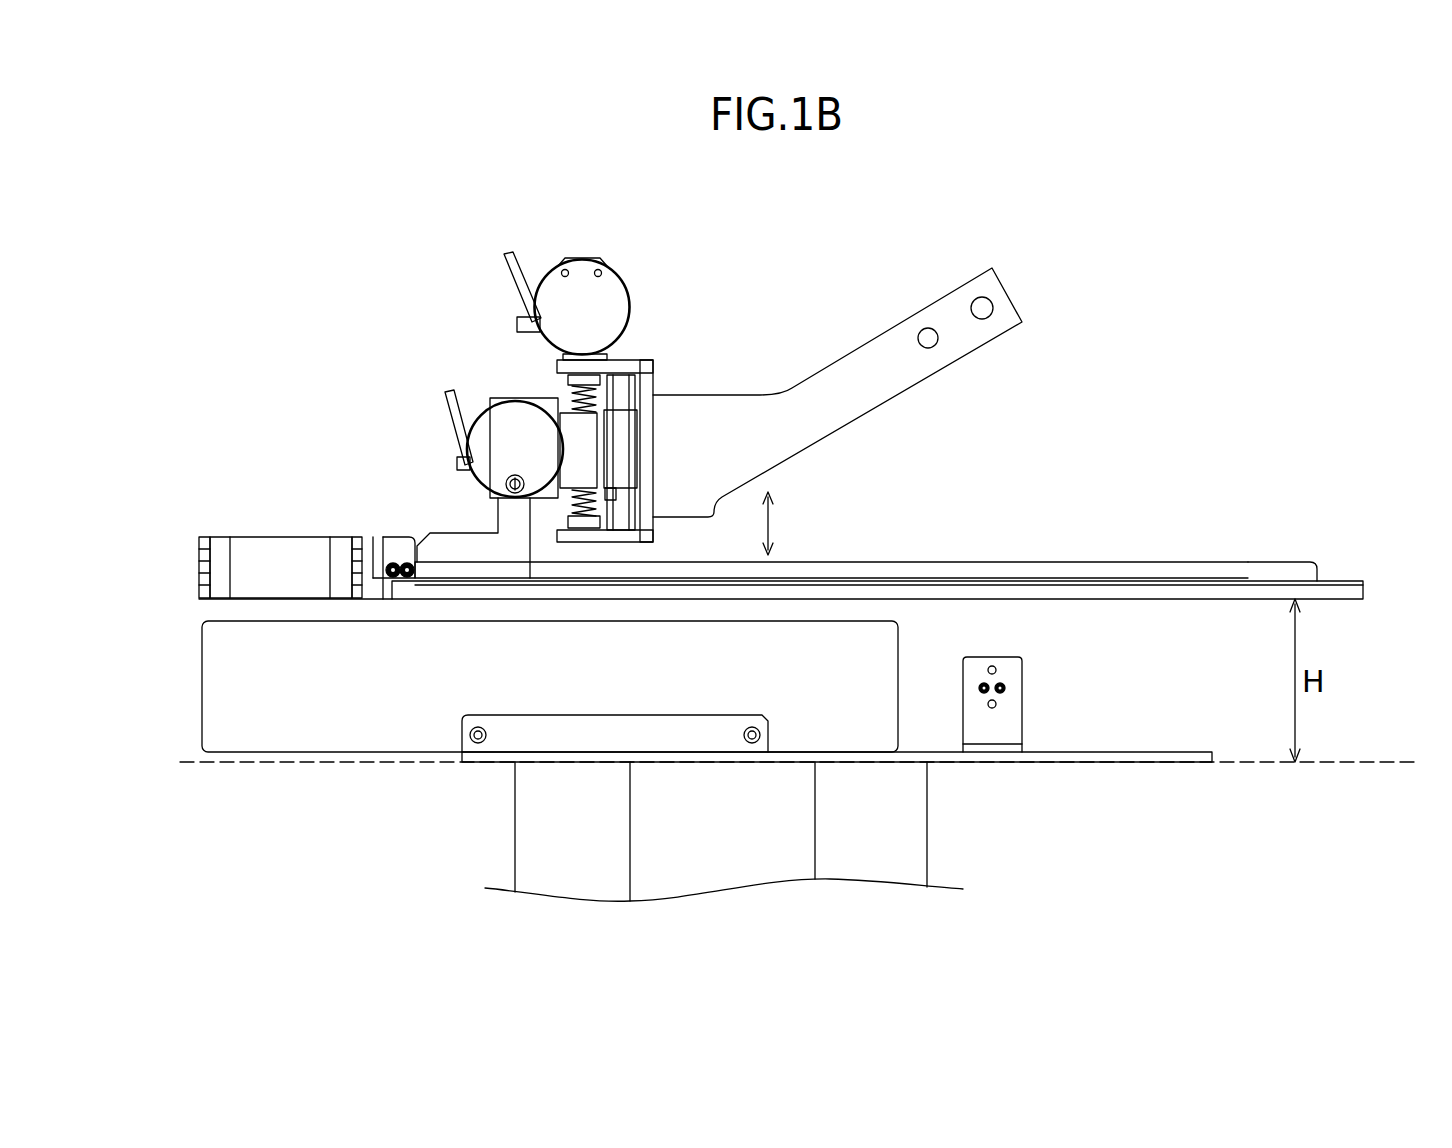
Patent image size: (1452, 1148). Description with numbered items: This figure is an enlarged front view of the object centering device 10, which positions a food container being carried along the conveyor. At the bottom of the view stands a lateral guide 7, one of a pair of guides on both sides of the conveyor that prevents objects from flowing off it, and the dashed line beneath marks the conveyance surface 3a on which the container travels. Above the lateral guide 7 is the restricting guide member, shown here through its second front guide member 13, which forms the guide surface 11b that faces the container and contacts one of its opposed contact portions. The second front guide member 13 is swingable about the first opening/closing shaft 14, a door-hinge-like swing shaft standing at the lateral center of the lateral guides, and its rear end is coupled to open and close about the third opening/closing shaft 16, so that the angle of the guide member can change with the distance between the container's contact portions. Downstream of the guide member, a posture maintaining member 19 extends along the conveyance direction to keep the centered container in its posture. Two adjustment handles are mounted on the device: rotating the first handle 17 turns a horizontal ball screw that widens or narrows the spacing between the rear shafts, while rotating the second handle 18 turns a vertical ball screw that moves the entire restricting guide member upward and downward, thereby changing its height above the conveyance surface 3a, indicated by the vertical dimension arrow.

The object centering device 10 is at (403, 308).
The second handle 18 is at (580, 275).
The first handle 17 is at (515, 420).
The posture maintaining member 19 is at (1283, 590).
The second front guide member 13 is at (307, 503).
The guide surface 11b is at (281, 537).
The first opening/closing shaft 14 is at (203, 537).
The third opening/closing shaft 16 is at (357, 537).
The lateral guide 7 is at (225, 690).
The conveyance surface 3a is at (1362, 762).